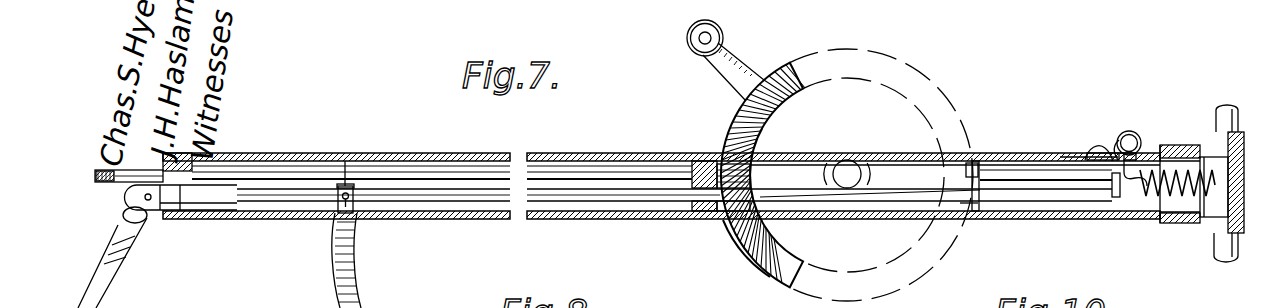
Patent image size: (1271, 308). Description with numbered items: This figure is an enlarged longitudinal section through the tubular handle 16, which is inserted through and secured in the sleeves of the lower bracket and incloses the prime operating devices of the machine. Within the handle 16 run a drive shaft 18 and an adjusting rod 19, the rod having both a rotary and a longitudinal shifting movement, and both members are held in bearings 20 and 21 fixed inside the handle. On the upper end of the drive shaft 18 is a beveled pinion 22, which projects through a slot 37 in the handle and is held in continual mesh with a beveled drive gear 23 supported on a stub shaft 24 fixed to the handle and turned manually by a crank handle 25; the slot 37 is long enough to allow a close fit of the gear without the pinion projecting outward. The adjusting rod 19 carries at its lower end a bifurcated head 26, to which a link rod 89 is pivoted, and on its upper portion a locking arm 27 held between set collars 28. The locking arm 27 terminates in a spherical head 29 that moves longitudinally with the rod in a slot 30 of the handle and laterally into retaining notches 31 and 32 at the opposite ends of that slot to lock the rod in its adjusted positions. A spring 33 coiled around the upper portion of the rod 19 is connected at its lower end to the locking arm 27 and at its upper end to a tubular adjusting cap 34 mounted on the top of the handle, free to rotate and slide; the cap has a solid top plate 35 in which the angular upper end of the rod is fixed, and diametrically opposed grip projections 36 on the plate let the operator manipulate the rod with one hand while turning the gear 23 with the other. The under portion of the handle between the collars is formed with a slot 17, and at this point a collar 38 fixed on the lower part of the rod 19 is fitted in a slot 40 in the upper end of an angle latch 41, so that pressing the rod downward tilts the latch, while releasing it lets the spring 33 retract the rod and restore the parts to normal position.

The tubular handle 16 is at (578, 157).
The slot 17 is at (314, 205).
The drive shaft 18 is at (400, 177).
The adjusting rod 19 is at (450, 198).
The bearing 20 is at (705, 158).
The bearing 21 is at (237, 156).
The beveled pinion 22 is at (753, 155).
The beveled drive gear 23 is at (755, 247).
The stub shaft 24 is at (848, 163).
The crank handle 25 is at (733, 57).
The bifurcated head 26 is at (210, 202).
The locking arm 27 is at (1100, 147).
The set collars 28 is at (1145, 193).
The spherical head 29 is at (1133, 134).
The slot 30 is at (1117, 137).
The retaining notch 31 is at (1093, 152).
The retaining notch 32 is at (1148, 157).
The spring 33 is at (1180, 197).
The tubular adjusting cap 34 is at (1213, 223).
The top plate 35 is at (1240, 220).
The grip projections 36 is at (1222, 107).
The slot 37 is at (973, 157).
The collar 38 is at (345, 162).
The slot 40 is at (353, 215).
The angle latch 41 is at (367, 260).
The link rod 89 is at (115, 280).